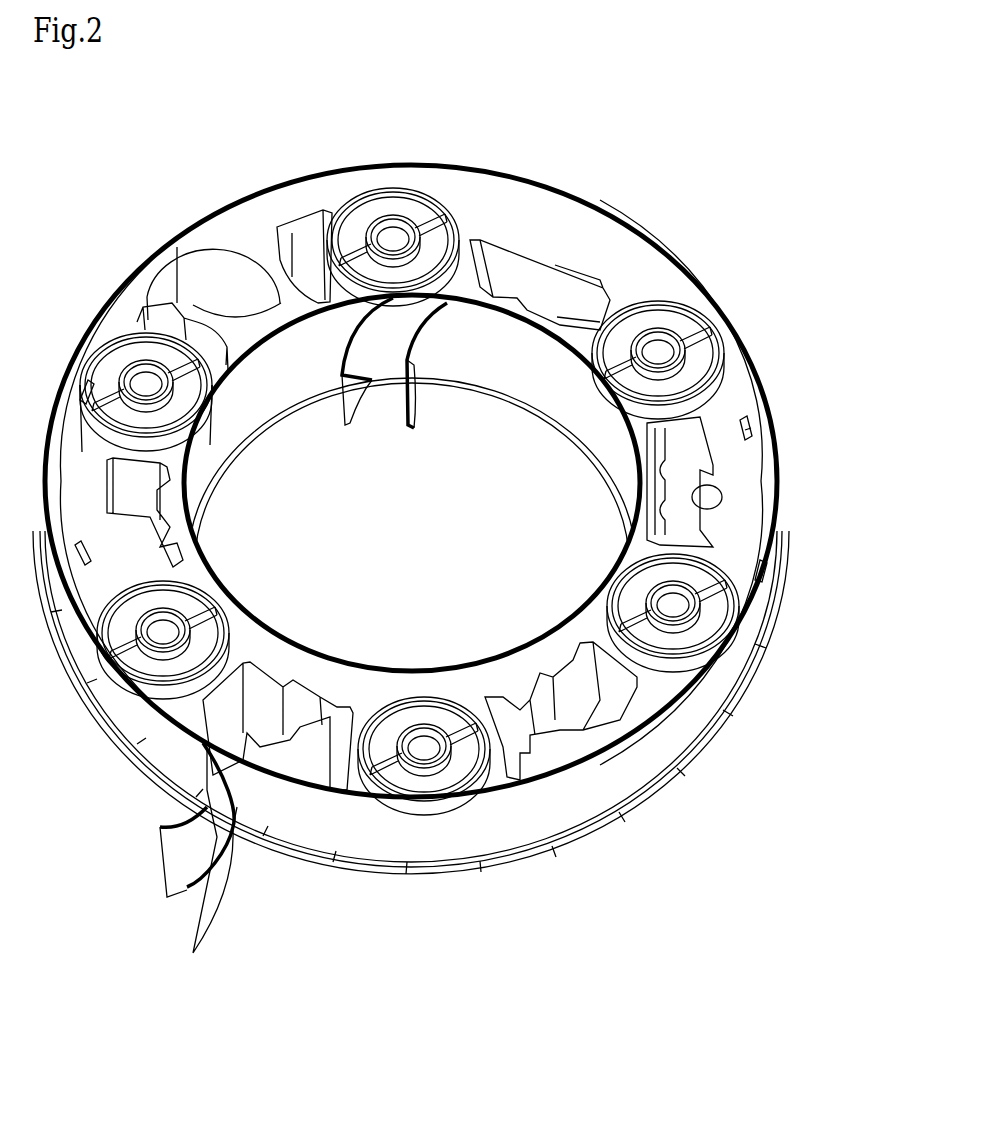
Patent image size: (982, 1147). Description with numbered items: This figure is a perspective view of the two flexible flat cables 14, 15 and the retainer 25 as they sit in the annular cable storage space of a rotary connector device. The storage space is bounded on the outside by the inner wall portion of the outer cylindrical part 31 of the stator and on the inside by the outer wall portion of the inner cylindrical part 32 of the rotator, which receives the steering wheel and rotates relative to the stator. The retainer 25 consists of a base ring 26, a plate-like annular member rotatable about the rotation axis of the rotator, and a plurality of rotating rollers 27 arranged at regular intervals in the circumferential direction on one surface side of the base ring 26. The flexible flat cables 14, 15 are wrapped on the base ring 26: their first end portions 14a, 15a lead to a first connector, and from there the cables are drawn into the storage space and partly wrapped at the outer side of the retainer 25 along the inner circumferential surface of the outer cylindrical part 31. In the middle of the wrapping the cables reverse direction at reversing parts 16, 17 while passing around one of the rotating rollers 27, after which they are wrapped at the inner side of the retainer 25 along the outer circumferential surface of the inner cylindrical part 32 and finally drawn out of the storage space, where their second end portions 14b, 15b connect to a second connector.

The flexible flat cable 14 is at (435, 835).
The first end portion 14a is at (170, 873).
The second end portion 14b is at (427, 372).
The flexible flat cable 15 is at (237, 807).
The first end portion 15a is at (207, 917).
The second end portion 15b is at (358, 382).
The reversing part 16 is at (136, 603).
The reversing part 17 is at (202, 293).
The retainer 25 is at (577, 893).
The base ring 26 is at (530, 287).
The rotating rollers 27 is at (203, 642).
The outer cylindrical part 31 is at (670, 245).
The inner cylindrical part 32 is at (593, 407).